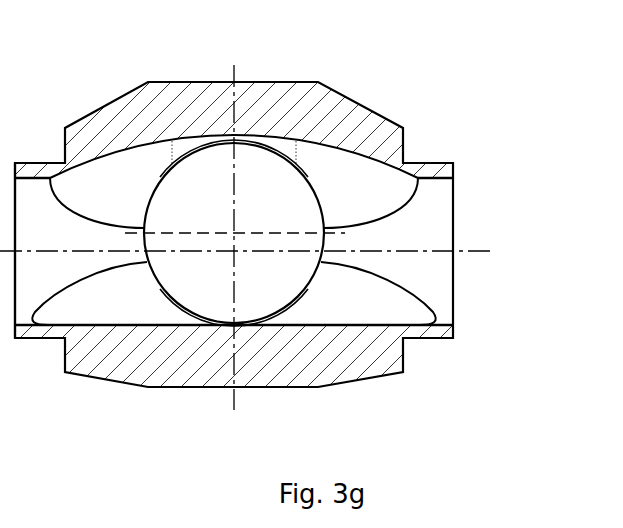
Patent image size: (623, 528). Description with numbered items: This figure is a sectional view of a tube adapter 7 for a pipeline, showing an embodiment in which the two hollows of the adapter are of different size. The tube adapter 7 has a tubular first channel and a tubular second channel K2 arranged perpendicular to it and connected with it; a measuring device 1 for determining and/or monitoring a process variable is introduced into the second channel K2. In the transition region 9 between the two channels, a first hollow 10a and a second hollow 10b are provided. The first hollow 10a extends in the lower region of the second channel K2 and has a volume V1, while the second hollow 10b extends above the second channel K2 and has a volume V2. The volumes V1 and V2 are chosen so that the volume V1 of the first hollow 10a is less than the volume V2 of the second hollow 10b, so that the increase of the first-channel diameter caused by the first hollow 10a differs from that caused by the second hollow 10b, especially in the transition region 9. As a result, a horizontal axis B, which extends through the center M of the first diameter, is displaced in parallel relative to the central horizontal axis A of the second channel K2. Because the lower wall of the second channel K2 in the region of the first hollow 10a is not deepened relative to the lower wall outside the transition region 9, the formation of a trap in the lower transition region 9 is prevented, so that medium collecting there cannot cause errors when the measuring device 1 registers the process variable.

The measuring device 1 is at (13, 257).
The tube adapter 7 is at (143, 58).
The transition region 9 is at (168, 300).
The first hollow 10a is at (330, 302).
The second hollow 10b is at (312, 156).
The second channel K2 is at (283, 210).
The volume of the first hollow V1 is at (360, 424).
The volume of the second hollow V2 is at (338, 69).
The central horizontal axis of the second channel A is at (245, 242).
The horizontal axis B is at (158, 222).
The center of the first diameter M is at (235, 237).